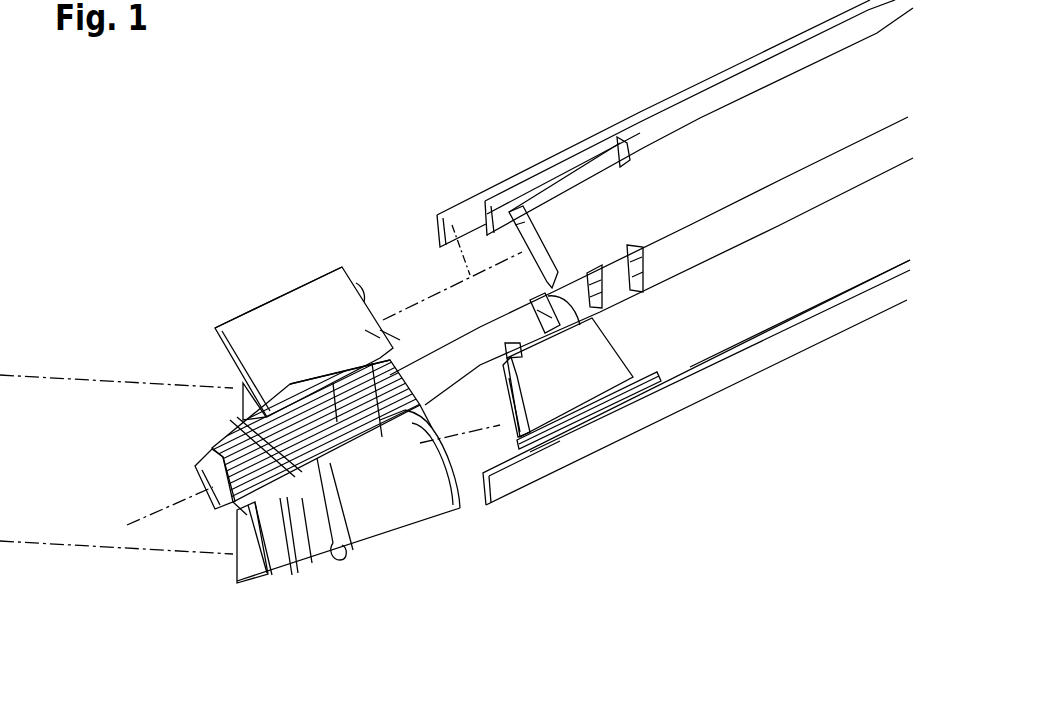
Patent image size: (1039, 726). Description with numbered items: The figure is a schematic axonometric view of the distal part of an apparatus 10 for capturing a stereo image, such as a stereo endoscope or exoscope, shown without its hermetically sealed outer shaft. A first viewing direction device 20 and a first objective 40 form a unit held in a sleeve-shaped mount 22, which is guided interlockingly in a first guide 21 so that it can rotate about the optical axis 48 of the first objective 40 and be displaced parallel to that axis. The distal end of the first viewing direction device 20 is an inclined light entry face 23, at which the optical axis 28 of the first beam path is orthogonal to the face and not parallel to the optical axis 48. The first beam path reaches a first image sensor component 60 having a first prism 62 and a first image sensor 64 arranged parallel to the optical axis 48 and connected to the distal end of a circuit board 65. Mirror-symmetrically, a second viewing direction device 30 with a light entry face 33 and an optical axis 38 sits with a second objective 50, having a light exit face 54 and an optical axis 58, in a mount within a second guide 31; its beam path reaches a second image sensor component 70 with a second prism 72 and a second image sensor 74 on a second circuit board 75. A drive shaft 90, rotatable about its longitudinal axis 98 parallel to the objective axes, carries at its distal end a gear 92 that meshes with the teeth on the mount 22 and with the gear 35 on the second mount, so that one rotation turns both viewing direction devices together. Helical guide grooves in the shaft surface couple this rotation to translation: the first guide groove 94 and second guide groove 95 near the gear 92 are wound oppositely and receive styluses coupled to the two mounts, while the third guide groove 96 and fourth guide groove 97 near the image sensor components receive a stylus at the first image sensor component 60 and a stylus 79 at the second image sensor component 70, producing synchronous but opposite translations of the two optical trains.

The apparatus 10 is at (222, 148).
The first viewing direction device 20 is at (263, 553).
The first guide 21 is at (377, 470).
The sleeve-shaped mount 22 is at (333, 543).
The light entry face 23 is at (233, 573).
The optical axis of the first viewing direction device 28 is at (42, 545).
The second viewing direction device 30 is at (222, 338).
The second guide 31 is at (268, 330).
The light entry face 33 is at (240, 411).
The gear 35 is at (336, 418).
The optical axis of the second viewing direction device 38 is at (44, 375).
The first objective 40 is at (250, 570).
The optical axis of the first objective 48 is at (502, 500).
The second objective 50 is at (372, 333).
The light exit face 54 is at (397, 333).
The optical axis of the second objective 58 is at (456, 228).
The first image sensor component 60 is at (568, 387).
The first prism 62 is at (553, 430).
The first image sensor 64 is at (611, 403).
The circuit board 65 is at (830, 290).
The second image sensor component 70 is at (572, 208).
The bracket leg 72 is at (507, 212).
The second image sensor 74 is at (627, 246).
The second circuit board 75 is at (705, 86).
The stylus 79 is at (652, 248).
The drive shaft 90 is at (707, 245).
The gear 92 is at (453, 513).
The first guide groove 94 is at (350, 555).
The second guide groove 95 is at (331, 412).
The third guide groove 96 is at (643, 396).
The fourth guide groove 97 is at (643, 278).
The longitudinal axis 98 is at (131, 515).